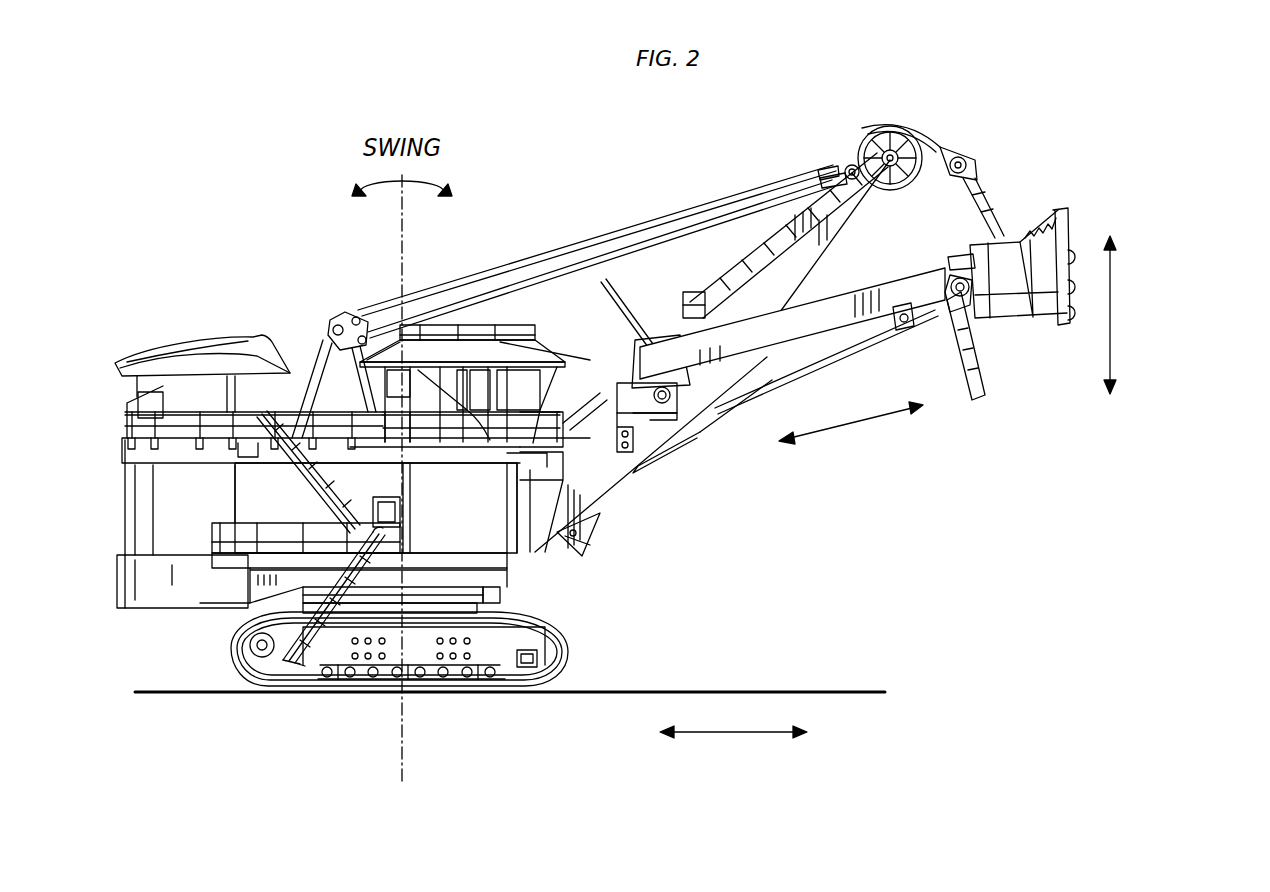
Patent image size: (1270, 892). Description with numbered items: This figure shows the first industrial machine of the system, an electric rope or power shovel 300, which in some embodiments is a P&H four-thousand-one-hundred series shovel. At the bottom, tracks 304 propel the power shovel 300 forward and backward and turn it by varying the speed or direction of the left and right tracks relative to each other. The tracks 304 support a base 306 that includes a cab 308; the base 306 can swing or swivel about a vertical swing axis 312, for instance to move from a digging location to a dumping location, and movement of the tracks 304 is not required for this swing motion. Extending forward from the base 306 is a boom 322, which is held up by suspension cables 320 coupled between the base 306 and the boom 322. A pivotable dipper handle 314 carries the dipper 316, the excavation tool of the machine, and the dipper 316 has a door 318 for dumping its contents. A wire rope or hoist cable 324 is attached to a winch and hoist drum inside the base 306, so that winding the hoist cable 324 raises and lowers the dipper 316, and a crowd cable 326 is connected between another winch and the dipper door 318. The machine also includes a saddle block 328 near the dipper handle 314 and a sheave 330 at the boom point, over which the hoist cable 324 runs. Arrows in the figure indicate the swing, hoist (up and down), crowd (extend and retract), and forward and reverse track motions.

The power shovel 300 is at (170, 226).
The tracks 304 is at (566, 656).
The base 306 is at (178, 530).
The cab 308 is at (513, 347).
The swing axis 312 is at (400, 731).
The dipper handle 314 is at (833, 300).
The dipper 316 is at (1013, 237).
The door 318 is at (973, 363).
The suspension cables 320 is at (500, 266).
The boom 322 is at (857, 203).
The hoist cable 324 is at (836, 152).
The crowd cable 326 is at (763, 377).
The saddle block 328 is at (628, 342).
The sheave 330 is at (893, 124).